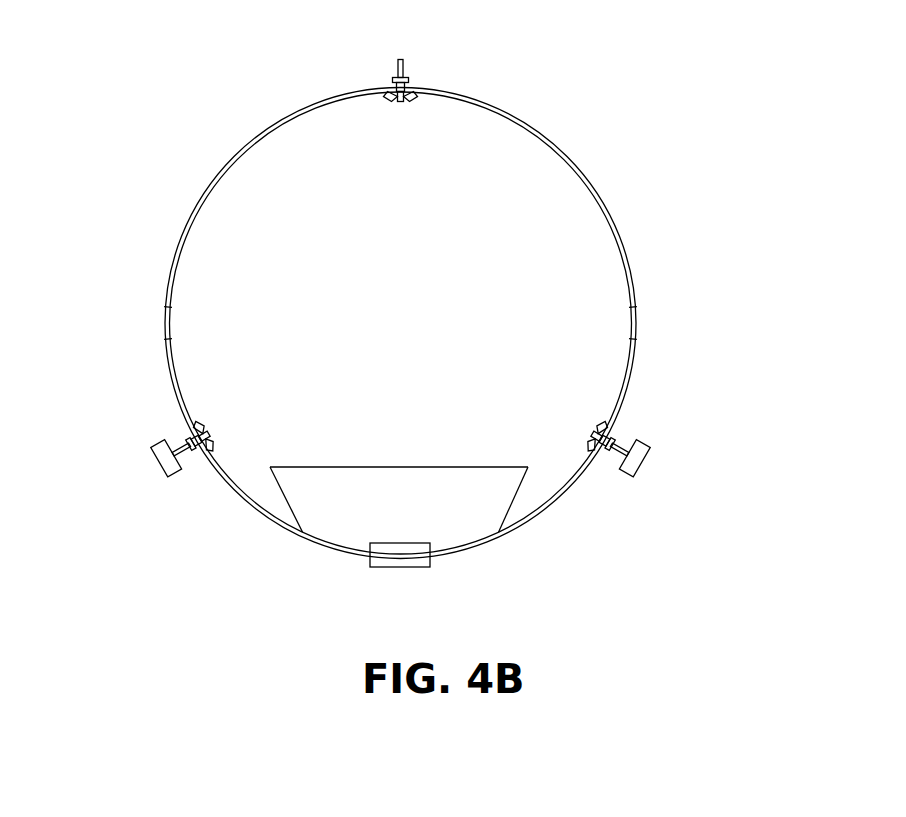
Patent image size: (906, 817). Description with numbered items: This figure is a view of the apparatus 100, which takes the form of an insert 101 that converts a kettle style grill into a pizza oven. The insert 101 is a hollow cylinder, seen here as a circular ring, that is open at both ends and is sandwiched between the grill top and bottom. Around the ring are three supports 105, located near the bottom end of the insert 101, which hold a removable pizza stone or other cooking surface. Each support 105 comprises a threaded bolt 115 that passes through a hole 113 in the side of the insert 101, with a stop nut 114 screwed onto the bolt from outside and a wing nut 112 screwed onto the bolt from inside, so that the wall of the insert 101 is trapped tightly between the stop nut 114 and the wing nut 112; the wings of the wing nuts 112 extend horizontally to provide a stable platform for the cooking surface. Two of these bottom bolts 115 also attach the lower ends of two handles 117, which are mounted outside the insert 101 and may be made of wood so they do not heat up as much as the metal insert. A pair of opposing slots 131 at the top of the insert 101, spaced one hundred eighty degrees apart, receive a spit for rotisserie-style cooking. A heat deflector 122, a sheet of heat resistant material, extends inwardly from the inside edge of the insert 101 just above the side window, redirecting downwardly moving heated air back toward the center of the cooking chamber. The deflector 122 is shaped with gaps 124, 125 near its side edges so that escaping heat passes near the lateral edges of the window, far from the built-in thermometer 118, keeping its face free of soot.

The apparatus 100 is at (580, 101).
The insert 101 is at (218, 168).
The supports 105 is at (430, 110).
The wing nuts 112 is at (401, 105).
The holes 113 is at (410, 88).
The stop nuts 114 is at (408, 72).
The threaded bolts 115 is at (393, 80).
The handles 117 is at (160, 458).
The thermometer 118 is at (407, 567).
The heat deflector 122 is at (400, 467).
The gap 124 is at (270, 490).
The gap 125 is at (515, 497).
The slots 131 is at (168, 323).